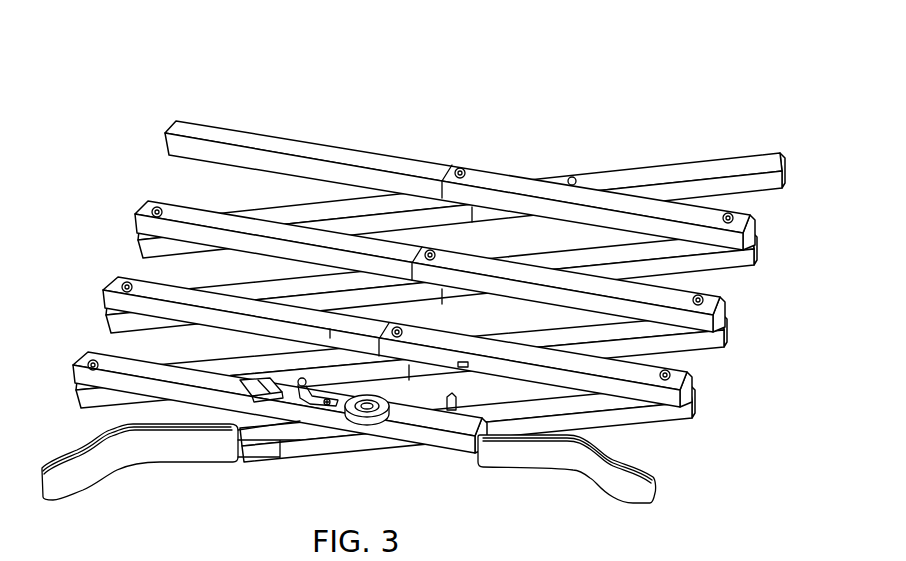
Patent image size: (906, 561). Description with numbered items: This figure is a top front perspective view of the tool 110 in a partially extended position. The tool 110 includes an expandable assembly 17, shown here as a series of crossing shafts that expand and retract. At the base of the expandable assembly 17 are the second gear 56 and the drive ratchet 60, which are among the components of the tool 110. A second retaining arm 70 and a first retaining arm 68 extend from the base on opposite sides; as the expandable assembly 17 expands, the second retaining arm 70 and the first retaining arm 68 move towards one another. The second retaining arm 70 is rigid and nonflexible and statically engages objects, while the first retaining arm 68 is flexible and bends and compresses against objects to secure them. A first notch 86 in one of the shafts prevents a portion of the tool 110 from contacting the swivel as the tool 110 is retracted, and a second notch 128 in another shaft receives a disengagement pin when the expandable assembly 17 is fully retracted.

The tool 110 is at (143, 85).
The expandable assembly 17 is at (145, 111).
The second notch 128 is at (328, 333).
The first notch 86 is at (463, 360).
The second gear 56 is at (370, 398).
The drive ratchet 60 is at (317, 412).
The second retaining arm 70 is at (78, 453).
The first retaining arm 68 is at (622, 460).